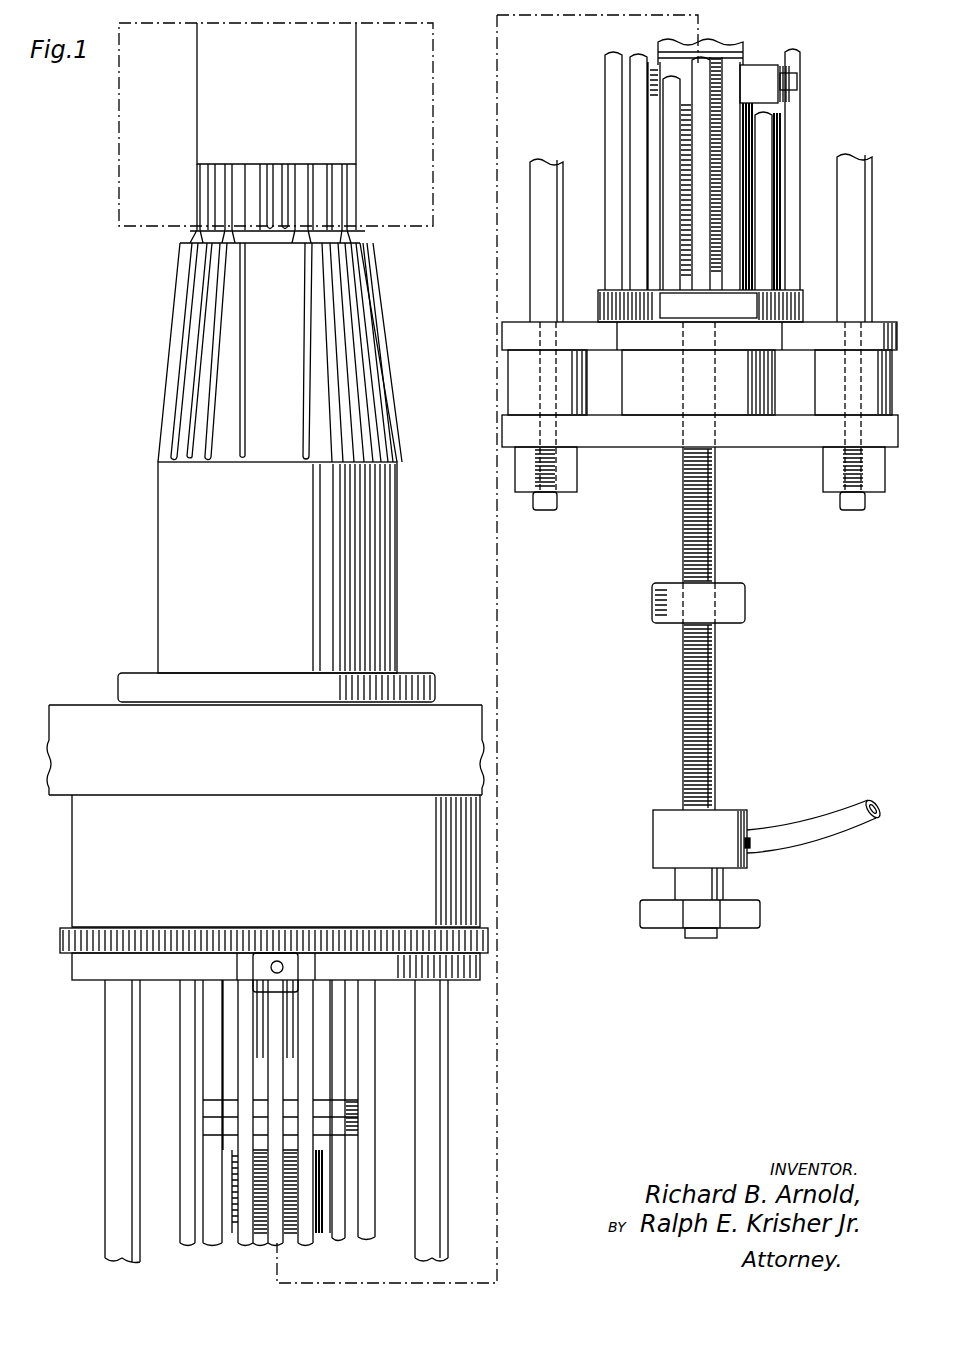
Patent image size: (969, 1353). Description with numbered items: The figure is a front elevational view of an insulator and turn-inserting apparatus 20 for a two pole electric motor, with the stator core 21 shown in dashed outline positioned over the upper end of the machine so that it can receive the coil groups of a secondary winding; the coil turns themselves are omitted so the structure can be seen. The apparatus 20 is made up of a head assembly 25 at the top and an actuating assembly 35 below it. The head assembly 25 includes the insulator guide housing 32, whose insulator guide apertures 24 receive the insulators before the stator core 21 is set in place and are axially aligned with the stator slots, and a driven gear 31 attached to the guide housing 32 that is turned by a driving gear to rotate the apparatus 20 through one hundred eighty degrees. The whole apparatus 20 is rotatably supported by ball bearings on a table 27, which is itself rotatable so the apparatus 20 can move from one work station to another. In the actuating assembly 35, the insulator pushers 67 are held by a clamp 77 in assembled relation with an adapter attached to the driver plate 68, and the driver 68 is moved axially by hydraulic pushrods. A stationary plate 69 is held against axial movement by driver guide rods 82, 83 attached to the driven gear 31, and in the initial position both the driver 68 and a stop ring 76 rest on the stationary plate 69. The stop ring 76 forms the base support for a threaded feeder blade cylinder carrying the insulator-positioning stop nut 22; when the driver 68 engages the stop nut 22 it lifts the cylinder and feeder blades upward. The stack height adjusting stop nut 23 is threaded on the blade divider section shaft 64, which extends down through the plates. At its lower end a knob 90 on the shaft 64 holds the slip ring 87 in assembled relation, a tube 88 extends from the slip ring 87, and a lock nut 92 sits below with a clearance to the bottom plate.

The insulator and turn-inserting apparatus 20 is at (462, 603).
The stator core 21 is at (434, 93).
The insulator-positioning stop nut 22 is at (752, 75).
The stack height adjusting stop nut 23 is at (747, 602).
The insulator guide apertures 24 is at (347, 235).
The head assembly 25 is at (387, 339).
The table 27 is at (74, 705).
The driven gear 31 is at (62, 942).
The insulator guide housing 32 is at (398, 507).
The actuating assembly 35 is at (644, 448).
The blade divider section shaft 64 is at (715, 555).
The insulator pushers 67 is at (338, 1093).
The driver plate 68 is at (881, 322).
The stationary plate 69 is at (798, 448).
The stop ring 76 is at (777, 387).
The clamp 77 is at (805, 307).
The driver guide rod 82 is at (106, 1092).
The driver guide rod 83 is at (448, 1088).
The slip ring 87 is at (733, 812).
The tube 88 is at (840, 837).
The knob 90 is at (760, 912).
The lock nut 92 is at (717, 933).